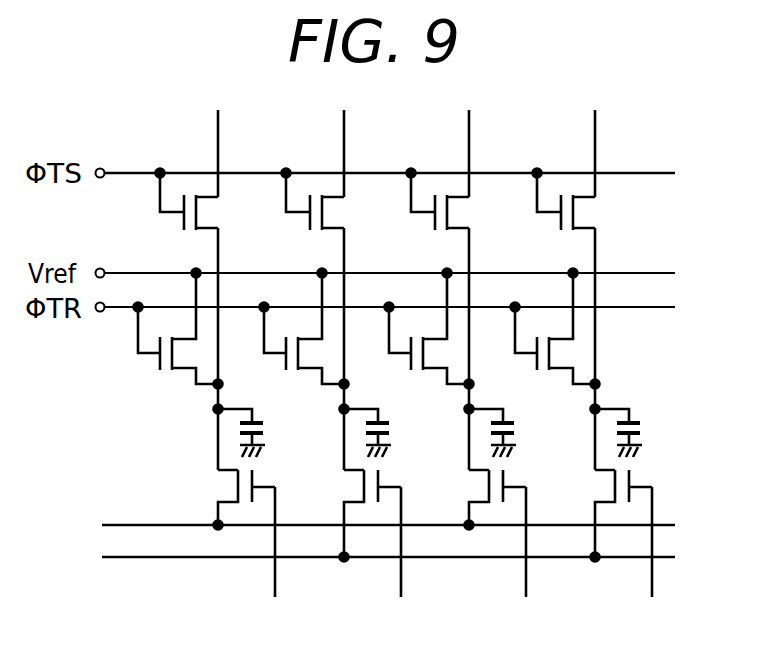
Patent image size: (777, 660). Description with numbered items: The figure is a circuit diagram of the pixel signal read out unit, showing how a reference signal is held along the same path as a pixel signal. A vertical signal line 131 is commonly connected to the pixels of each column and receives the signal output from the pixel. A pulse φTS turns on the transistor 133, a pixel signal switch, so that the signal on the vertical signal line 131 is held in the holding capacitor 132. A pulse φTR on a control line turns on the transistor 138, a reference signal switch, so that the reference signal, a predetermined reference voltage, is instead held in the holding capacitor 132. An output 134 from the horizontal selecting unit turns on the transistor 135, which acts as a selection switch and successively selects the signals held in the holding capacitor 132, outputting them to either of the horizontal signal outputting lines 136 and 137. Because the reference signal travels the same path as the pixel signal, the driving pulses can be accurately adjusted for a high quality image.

The vertical signal line 131 is at (220, 130).
The holding capacitor 132 is at (263, 437).
The transistor (pixel signal switch) 133 is at (205, 213).
The output from the horizontal selecting unit 134 is at (277, 582).
The transistor (selection switch) 135 is at (227, 486).
The horizontal signal outputting line 136 is at (122, 522).
The horizontal signal outputting line 137 is at (122, 560).
The transistor (reference signal switch) 138 is at (182, 377).